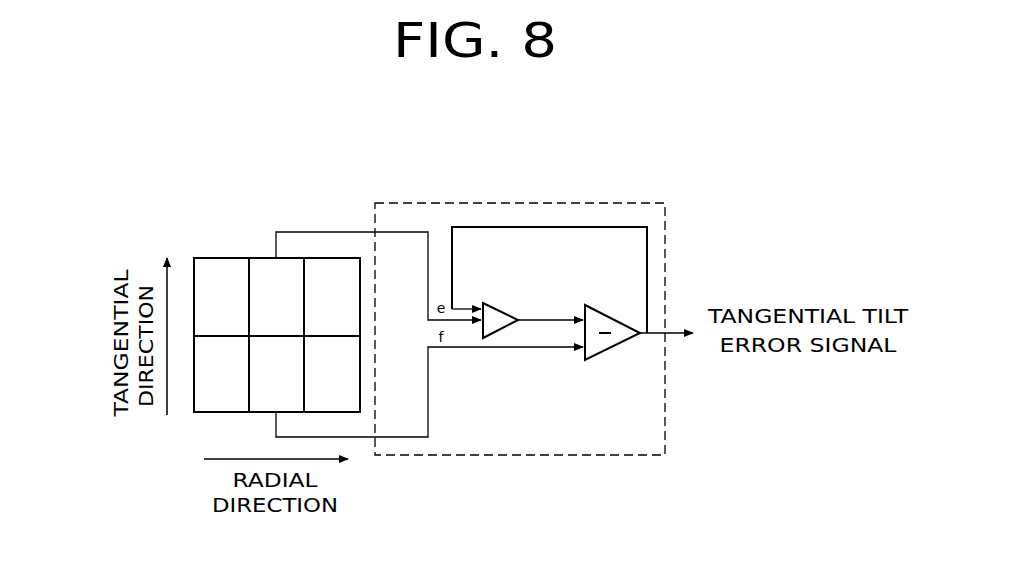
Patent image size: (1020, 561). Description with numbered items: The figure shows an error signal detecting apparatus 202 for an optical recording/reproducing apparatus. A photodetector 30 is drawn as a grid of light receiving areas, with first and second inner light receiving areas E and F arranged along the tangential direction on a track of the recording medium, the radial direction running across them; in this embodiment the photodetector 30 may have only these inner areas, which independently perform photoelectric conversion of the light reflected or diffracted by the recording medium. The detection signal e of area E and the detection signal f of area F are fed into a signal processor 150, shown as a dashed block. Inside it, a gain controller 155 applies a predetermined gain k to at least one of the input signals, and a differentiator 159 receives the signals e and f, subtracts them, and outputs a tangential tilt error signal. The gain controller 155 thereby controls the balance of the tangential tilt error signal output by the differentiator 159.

The photodetector 30 is at (189, 251).
The signal processor 150 is at (594, 203).
The gain controller 155 is at (503, 303).
The differentiator 159 is at (611, 305).
The error signal detecting apparatus 202 is at (702, 192).